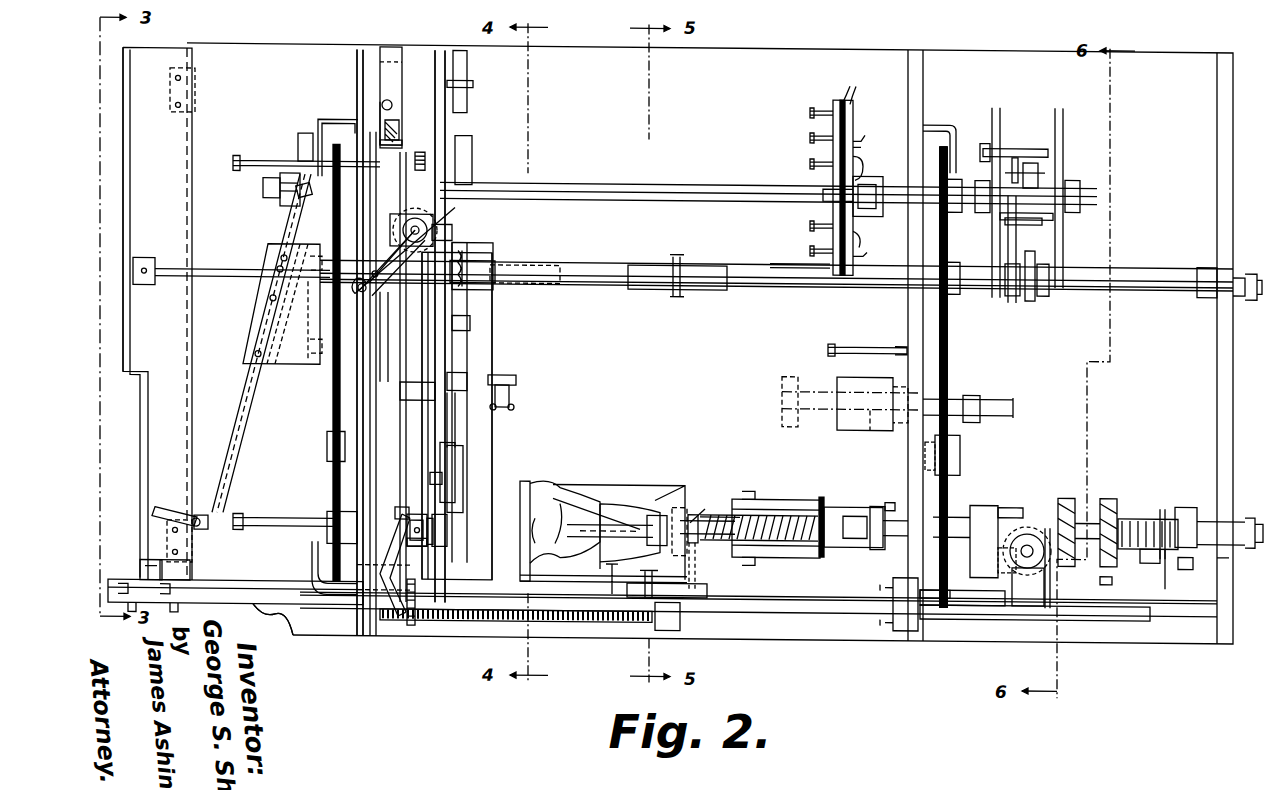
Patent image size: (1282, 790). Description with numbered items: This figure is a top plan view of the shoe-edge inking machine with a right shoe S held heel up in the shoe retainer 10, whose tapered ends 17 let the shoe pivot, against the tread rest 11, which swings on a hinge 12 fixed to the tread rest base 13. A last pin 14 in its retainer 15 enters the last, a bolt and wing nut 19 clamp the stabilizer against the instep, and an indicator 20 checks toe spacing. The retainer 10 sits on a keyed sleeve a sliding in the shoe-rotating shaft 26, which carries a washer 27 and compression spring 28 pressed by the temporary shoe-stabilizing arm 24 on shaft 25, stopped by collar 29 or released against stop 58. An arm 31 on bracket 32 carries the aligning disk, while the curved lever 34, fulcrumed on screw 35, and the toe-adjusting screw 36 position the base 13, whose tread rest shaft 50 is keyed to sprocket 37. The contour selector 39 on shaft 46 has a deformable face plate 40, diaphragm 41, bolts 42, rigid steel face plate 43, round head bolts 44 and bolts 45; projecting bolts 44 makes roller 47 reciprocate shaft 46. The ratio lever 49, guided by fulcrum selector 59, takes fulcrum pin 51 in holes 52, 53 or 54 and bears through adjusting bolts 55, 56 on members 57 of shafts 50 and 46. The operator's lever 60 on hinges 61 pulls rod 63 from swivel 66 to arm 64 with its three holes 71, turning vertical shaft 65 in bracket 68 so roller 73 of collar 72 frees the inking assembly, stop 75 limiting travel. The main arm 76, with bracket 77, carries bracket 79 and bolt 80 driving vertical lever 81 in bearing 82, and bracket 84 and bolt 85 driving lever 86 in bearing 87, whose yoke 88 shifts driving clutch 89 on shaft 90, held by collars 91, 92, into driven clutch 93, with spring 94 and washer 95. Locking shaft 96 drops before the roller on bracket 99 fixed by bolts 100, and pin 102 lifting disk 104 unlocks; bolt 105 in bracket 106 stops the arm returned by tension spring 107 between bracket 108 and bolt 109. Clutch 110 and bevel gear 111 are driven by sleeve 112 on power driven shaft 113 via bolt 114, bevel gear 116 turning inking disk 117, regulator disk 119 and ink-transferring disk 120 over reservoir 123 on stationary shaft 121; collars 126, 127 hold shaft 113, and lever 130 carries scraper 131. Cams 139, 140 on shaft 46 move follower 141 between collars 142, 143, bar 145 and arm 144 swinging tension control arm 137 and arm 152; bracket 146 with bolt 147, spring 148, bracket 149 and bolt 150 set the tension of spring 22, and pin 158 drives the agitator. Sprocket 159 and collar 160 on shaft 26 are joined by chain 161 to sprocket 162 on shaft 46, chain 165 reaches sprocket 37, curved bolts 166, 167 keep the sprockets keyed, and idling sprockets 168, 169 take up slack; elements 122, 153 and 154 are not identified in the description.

The right shoe S is at (548, 485).
The shoe retainer 10 is at (629, 488).
The tread rest 11 is at (444, 536).
The hinge 12 is at (418, 538).
The tread rest base 13 is at (408, 510).
The last pin 14 is at (630, 514).
The last pin retainer 15 is at (684, 500).
The tapered ends 17 is at (562, 540).
The bolt and wing nut 19 is at (604, 572).
The indicator 20 is at (357, 80).
The tension spring 22 is at (416, 163).
The shoe-stabilizing arm 24 is at (840, 422).
The shaft 25 is at (870, 424).
The shoe-rotating shaft 26 is at (732, 496).
The washer 27 is at (824, 498).
The compression spring 28 is at (777, 504).
The collar 29 is at (978, 392).
The arm 31 is at (444, 122).
The bracket 32 is at (466, 323).
The curved lever 34 is at (415, 560).
The screw 35 is at (394, 546).
The toe-adjusting screw 36 is at (444, 524).
The sprocket 37 is at (328, 508).
The contour selector 39 is at (820, 118).
The deformable face plate 40 is at (869, 167).
The flexible steel diaphragm 41 is at (854, 128).
The bolts 42 is at (856, 140).
The rigid steel face plate 43 is at (825, 139).
The round head bolts 44 is at (812, 158).
The bolts 45 is at (866, 224).
The shaft 46 is at (545, 188).
The roller 47 is at (872, 232).
The ratio lever 49 is at (234, 406).
The tread rest shaft 50 is at (466, 97).
The fulcrum pin 51 is at (254, 350).
The hole 52 is at (270, 293).
The hole 53 is at (276, 268).
The hole 54 is at (280, 256).
The adjusting bolt 55 is at (174, 508).
The adjusting bolt 56 is at (262, 180).
The member 57 is at (225, 518).
The stop 58 is at (863, 346).
The fulcrum selector 59 is at (288, 354).
The operator's lever 60 is at (124, 157).
The hinges 61 is at (193, 90).
The rod 63 is at (173, 278).
The arm 64 is at (341, 236).
The vertical shaft 65 is at (429, 223).
The swivel 66 is at (142, 258).
The adjustable bracket 68 is at (411, 220).
The holes 71 is at (390, 288).
The collar 72 is at (456, 221).
The roller 73 is at (427, 251).
The adjustable lever stop 75 is at (248, 160).
The main arm 76 is at (228, 592).
The adjustable bracket 77 is at (191, 576).
The adjustable bracket 79 is at (708, 587).
The bolt 80 is at (697, 540).
The vertical lever 81 is at (702, 522).
The bearing 82 is at (782, 558).
The adjustable bracket 84 is at (1078, 608).
The bolt 85 is at (892, 608).
The vertical lever 86 is at (1142, 556).
The bearing 87 is at (1170, 570).
The yoke 88 is at (1186, 562).
The driving clutch 89 is at (1126, 510).
The shaft 90 is at (1112, 500).
The collar 91 is at (1236, 550).
The collar 92 is at (1226, 518).
The driven clutch 93 is at (1072, 504).
The compression spring 94 is at (1162, 500).
The washer 95 is at (1184, 500).
The vertical locking shaft 96 is at (1010, 560).
The bracket 99 is at (1052, 568).
The bolts 100 is at (1036, 617).
The pin 102 is at (1002, 570).
The disk 104 is at (1012, 530).
The bolt 105 is at (996, 514).
The bracket 106 is at (978, 615).
The tension spring 107 is at (581, 617).
The bracket 108 is at (683, 616).
The bolt 109 is at (374, 606).
The rotatable clutch 110 is at (481, 258).
The bevel gear 111 is at (471, 265).
The sleeve 112 is at (583, 282).
The power driven shaft 113 is at (774, 280).
The bolt 114 is at (680, 286).
The bevel gear 116 is at (853, 86).
The geared inking disk 117 is at (492, 282).
The regulator disk 119 is at (470, 428).
The ink-transferring disk 120 is at (456, 498).
The shaft 121 is at (510, 272).
The block 122 is at (436, 462).
The ink reservoir 123 is at (490, 468).
The collar 126 is at (1196, 288).
The collar 127 is at (950, 298).
The ink-control lever 130 is at (419, 394).
The rubber scraper 131 is at (462, 380).
The rotatable tension control arm 137 is at (476, 148).
The cam 139 is at (1031, 218).
The cam 140 is at (1012, 140).
The follower 141 is at (1040, 248).
The collar 142 is at (1008, 287).
The collar 143 is at (1048, 286).
The arm 144 is at (1040, 162).
The bar 145 is at (993, 238).
The tension-control bracket 146 is at (393, 77).
The bolt 147 is at (399, 140).
The spring 148 is at (397, 124).
The bracket 149 is at (395, 94).
The bolt 150 is at (393, 103).
The arm 152 is at (297, 138).
The block 153 is at (426, 478).
The plate 154 is at (422, 438).
The pin 158 is at (278, 198).
The sprocket 159 is at (950, 490).
The collar 160 is at (878, 558).
The chain 161 is at (955, 346).
The sprocket 162 is at (948, 235).
The chain 165 is at (316, 326).
The curved bolt 166 is at (953, 140).
The curved bolt 167 is at (322, 118).
The idling sprocket 168 is at (962, 442).
The idling sprocket 169 is at (330, 458).
The keyed sleeve a is at (731, 491).